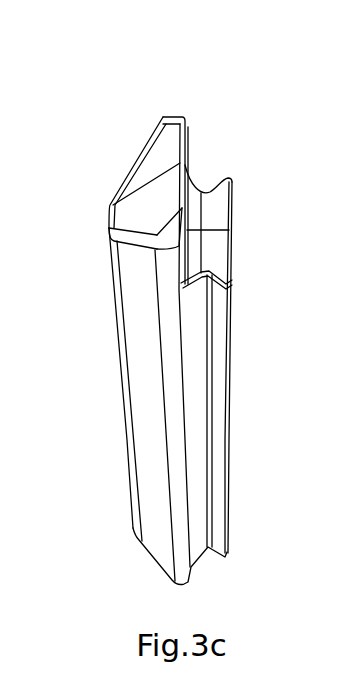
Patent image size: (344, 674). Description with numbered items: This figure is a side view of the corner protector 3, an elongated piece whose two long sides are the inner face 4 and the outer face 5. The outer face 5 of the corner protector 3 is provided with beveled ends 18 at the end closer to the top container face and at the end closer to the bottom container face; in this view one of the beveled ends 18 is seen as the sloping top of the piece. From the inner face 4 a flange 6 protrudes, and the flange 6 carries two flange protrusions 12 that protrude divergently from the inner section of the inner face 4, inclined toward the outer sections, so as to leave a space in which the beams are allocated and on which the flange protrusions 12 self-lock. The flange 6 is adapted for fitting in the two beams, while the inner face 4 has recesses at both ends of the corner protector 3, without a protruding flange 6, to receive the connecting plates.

The corner protector 3 is at (149, 101).
The inner face 4 is at (228, 405).
The outer face 5 is at (118, 348).
The flange 6 is at (195, 188).
The flange protrusions 12 is at (223, 190).
The beveled ends 18 is at (133, 177).